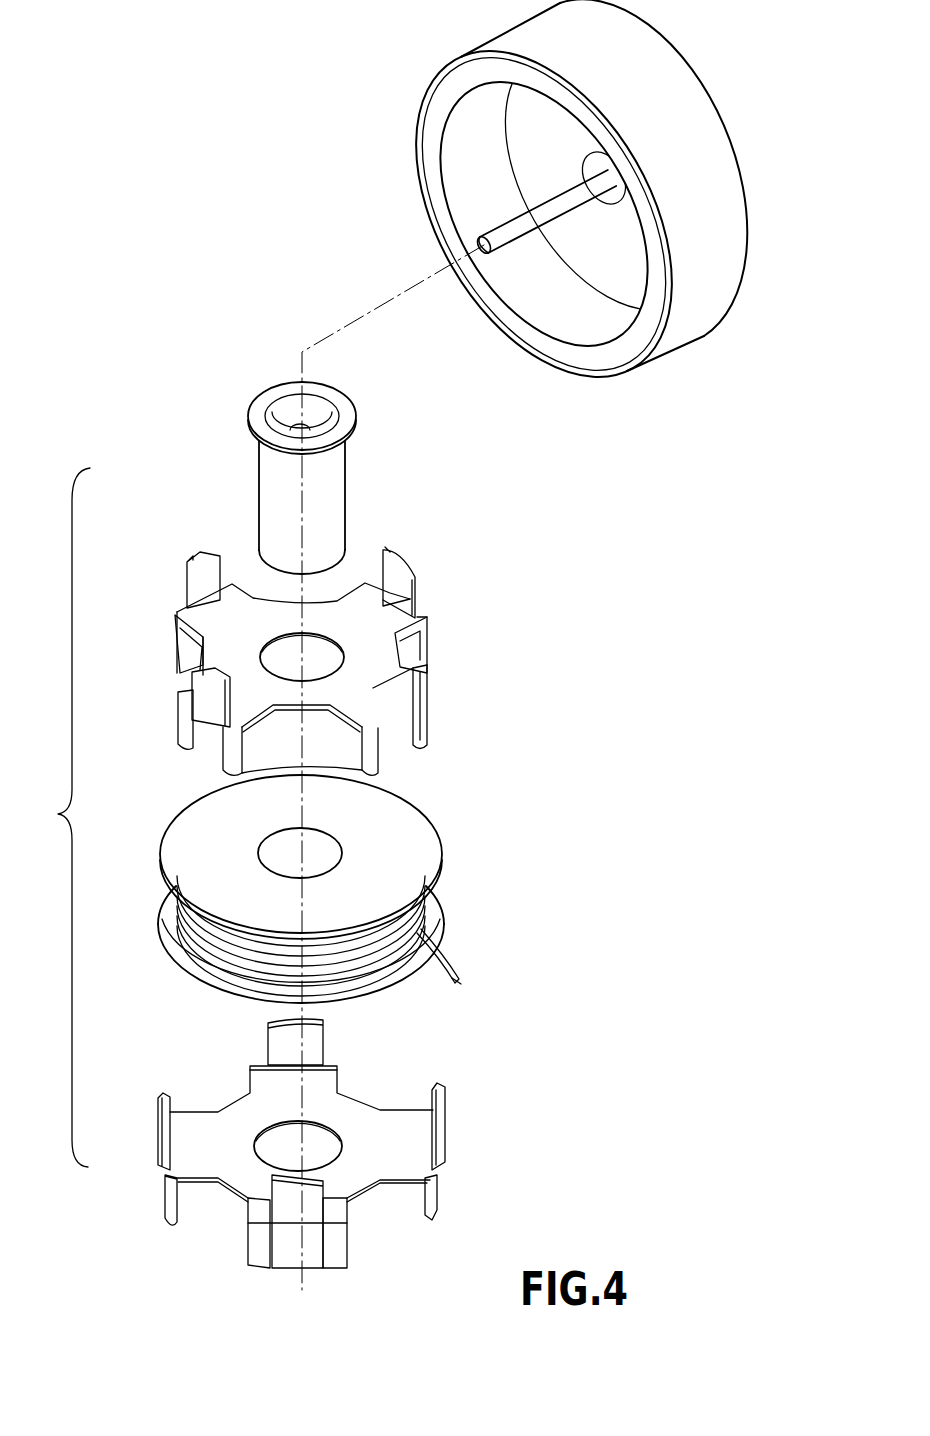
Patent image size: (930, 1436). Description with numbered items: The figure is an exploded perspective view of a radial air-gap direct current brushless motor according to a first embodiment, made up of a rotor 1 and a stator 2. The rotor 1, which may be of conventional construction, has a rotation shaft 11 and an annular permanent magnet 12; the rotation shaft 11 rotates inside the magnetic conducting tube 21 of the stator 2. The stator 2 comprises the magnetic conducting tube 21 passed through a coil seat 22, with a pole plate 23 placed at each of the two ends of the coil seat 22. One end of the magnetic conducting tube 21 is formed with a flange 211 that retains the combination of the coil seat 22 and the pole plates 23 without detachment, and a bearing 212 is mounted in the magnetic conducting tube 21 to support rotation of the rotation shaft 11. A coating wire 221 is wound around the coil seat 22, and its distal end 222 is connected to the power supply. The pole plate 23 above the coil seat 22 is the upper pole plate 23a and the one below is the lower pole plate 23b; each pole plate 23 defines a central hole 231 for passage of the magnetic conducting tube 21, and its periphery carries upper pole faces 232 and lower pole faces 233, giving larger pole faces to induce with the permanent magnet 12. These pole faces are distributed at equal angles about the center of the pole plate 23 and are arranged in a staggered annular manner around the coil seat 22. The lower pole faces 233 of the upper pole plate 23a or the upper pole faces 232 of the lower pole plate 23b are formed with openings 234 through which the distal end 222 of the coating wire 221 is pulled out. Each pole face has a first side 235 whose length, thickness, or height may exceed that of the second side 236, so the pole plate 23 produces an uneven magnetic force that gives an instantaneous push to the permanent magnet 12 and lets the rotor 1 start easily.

The rotor 1 is at (559, 210).
The rotation shaft 11 is at (527, 228).
The annular permanent magnet 12 is at (622, 340).
The stator 2 is at (312, 810).
The magnetic conducting tube 21 is at (319, 435).
The flange 211 is at (269, 388).
The bearing 212 is at (322, 423).
The coil seat 22 is at (356, 899).
The coating wire 221 is at (423, 913).
The distal end 222 is at (457, 975).
The pole plate 23 is at (200, 615).
The upper pole plate 23a is at (383, 618).
The lower pole plate 23b is at (357, 1107).
The central hole 231 is at (273, 648).
The upper pole faces 232 is at (418, 557).
The lower pole faces 233 is at (428, 655).
The openings 234 is at (395, 733).
The first side 235 is at (387, 550).
The second side 236 is at (423, 585).